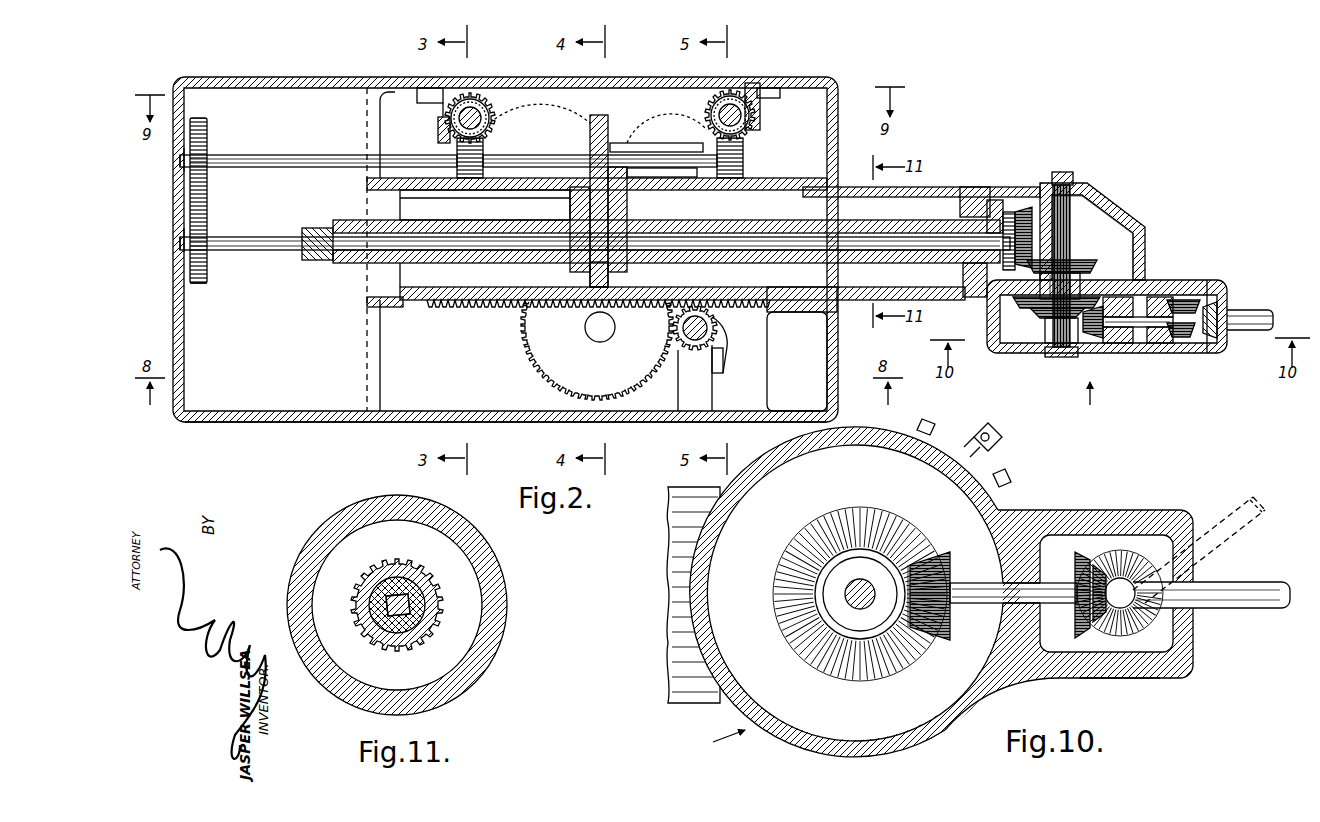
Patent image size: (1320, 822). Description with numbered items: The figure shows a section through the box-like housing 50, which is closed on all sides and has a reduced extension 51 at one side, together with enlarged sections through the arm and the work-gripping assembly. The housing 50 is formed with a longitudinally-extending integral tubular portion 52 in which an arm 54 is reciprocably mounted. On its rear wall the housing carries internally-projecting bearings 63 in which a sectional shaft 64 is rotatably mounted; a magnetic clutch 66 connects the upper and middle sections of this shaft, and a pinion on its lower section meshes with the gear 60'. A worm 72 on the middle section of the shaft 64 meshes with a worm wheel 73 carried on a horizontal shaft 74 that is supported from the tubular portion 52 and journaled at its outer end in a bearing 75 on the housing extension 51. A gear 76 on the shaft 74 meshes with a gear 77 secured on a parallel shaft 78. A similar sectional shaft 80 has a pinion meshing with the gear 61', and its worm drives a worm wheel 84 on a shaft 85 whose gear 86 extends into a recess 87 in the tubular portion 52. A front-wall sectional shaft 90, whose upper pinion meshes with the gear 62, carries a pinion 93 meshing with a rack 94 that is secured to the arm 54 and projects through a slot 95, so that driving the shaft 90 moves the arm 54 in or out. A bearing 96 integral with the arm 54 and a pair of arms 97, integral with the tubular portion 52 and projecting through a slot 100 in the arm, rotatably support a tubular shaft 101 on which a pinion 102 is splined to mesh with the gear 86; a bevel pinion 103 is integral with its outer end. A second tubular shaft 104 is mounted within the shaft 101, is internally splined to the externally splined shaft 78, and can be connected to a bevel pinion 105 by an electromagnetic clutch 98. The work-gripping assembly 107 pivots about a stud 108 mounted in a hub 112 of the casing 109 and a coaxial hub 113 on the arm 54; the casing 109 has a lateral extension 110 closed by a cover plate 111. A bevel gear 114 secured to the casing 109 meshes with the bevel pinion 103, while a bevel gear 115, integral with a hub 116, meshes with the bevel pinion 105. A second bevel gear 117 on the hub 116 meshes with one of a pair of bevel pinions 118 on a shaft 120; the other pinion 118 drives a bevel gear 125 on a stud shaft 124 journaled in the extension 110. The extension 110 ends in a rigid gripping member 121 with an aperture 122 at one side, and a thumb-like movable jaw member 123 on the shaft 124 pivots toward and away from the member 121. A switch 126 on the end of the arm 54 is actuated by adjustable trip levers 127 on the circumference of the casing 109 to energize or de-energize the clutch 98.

In FIG. 2, the housing 50 is at (760, 81).
In FIG. 2, the housing extension 51 is at (274, 412).
In FIG. 2, the tubular portion 52 is at (757, 181).
In FIG. 2, the arm 54 is at (948, 187).
In FIG. 10, the arm 54 is at (695, 700).
In FIG. 11, the arm 54 is at (491, 568).
In FIG. 2, the gear 60' is at (540, 123).
In FIG. 2, the gear 61' is at (667, 120).
In FIG. 2, the gear 62 is at (546, 377).
In FIG. 2, the bearings 63 is at (493, 100).
In FIG. 2, the sectional shaft 64 is at (453, 124).
In FIG. 2, the magnetic clutch 66 is at (497, 120).
In FIG. 2, the worm 72 is at (471, 107).
In FIG. 2, the worm wheel 73 is at (484, 159).
In FIG. 2, the shaft 74 is at (303, 157).
In FIG. 2, the bearing 75 is at (180, 232).
In FIG. 2, the gear 76 is at (207, 138).
In FIG. 2, the gear 77 is at (207, 268).
In FIG. 2, the shaft 78 is at (260, 251).
In FIG. 11, the shaft 78 is at (393, 620).
In FIG. 2, the sectional shaft 80 is at (744, 121).
In FIG. 2, the worm wheel 84 is at (736, 178).
In FIG. 2, the shaft 85 is at (668, 158).
In FIG. 2, the gear 86 is at (600, 115).
In FIG. 2, the recess 87 is at (575, 188).
In FIG. 2, the sectional shaft 90 is at (718, 322).
In FIG. 2, the pinion 93 is at (672, 327).
In FIG. 2, the rack 94 is at (470, 309).
In FIG. 2, the slot 95 is at (405, 308).
In FIG. 2, the bearing 96 is at (960, 207).
In FIG. 2, the arms 97 is at (627, 205).
In FIG. 2, the electromagnetic clutch 98 is at (1058, 176).
In FIG. 2, the slot 100 is at (752, 234).
In FIG. 2, the tubular shaft 101 is at (848, 220).
In FIG. 11, the tubular shaft 101 is at (433, 632).
In FIG. 2, the pinion 102 is at (609, 275).
In FIG. 2, the bevel pinion 103 is at (1008, 212).
In FIG. 2, the tubular shaft 104 is at (313, 228).
In FIG. 11, the tubular shaft 104 is at (412, 612).
In FIG. 2, the bevel pinion 105 is at (1024, 212).
In FIG. 2, the work-gripping assembly 107 is at (1092, 413).
In FIG. 10, the work-gripping assembly 107 is at (711, 746).
In FIG. 2, the stud 108 is at (1058, 344).
In FIG. 10, the stud 108 is at (800, 630).
In FIG. 2, the casing 109 is at (990, 316).
In FIG. 10, the casing 109 is at (957, 722).
In FIG. 10, the lateral extension 110 is at (1105, 655).
In FIG. 2, the cover plate 111 is at (1205, 352).
In FIG. 2, the hub 112 is at (1048, 352).
In FIG. 10, the hub 112 is at (840, 590).
In FIG. 2, the hub 113 is at (1092, 202).
In FIG. 2, the bevel gear 114 is at (1100, 270).
In FIG. 2, the bevel gear 115 is at (1085, 257).
In FIG. 2, the hub 116 is at (1030, 305).
In FIG. 2, the bevel gear 117 is at (1040, 316).
In FIG. 10, the bevel gear 117 is at (905, 562).
In FIG. 2, the bevel pinions 118 is at (1150, 343).
In FIG. 10, the bevel pinions 118 is at (948, 560).
In FIG. 2, the shaft 120 is at (1150, 309).
In FIG. 10, the shaft 120 is at (968, 606).
In FIG. 2, the gripping member 121 is at (1255, 331).
In FIG. 10, the gripping member 121 is at (1236, 610).
In FIG. 10, the aperture 122 is at (1180, 571).
In FIG. 2, the movable jaw member 123 is at (1245, 311).
In FIG. 10, the movable jaw member 123 is at (1236, 575).
In FIG. 2, the stud shaft 124 is at (1185, 300).
In FIG. 10, the stud shaft 124 is at (1118, 638).
In FIG. 2, the bevel gear 125 is at (1215, 302).
In FIG. 10, the bevel gear 125 is at (1090, 568).
In FIG. 10, the switch 126 is at (1000, 445).
In FIG. 10, the trip levers 127 is at (933, 428).